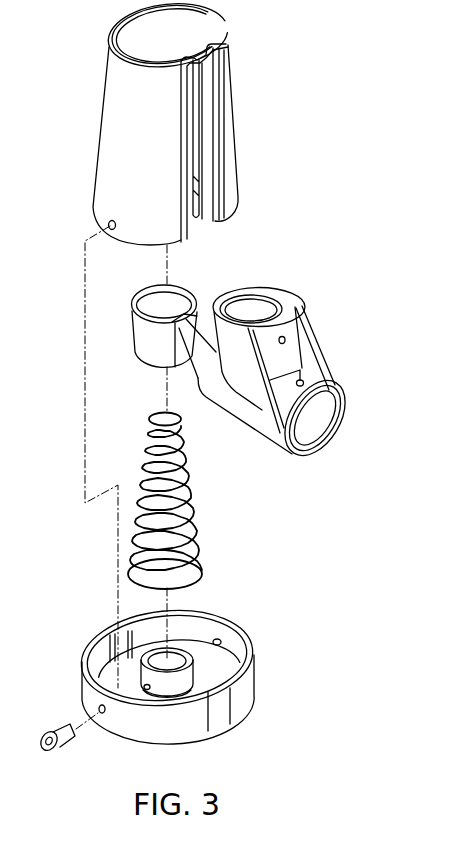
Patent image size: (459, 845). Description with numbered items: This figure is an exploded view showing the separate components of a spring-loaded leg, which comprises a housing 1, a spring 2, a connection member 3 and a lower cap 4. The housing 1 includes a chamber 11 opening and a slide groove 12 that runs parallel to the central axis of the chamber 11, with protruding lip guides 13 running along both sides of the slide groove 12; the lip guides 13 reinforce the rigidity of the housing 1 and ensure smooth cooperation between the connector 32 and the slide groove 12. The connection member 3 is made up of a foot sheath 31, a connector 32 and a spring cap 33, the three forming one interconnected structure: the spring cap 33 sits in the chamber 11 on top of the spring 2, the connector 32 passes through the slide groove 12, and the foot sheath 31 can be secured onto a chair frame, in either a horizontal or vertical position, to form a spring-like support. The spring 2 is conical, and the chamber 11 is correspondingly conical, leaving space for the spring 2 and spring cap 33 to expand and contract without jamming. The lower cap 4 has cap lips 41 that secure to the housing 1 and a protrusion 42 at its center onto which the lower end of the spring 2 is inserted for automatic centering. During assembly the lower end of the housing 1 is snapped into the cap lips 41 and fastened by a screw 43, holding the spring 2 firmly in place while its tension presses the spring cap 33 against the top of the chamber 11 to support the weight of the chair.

The housing 1 is at (100, 112).
The chamber 11 is at (202, 216).
The slide groove 12 is at (208, 156).
The lip guides 13 is at (192, 105).
The spring 2 is at (199, 528).
The connection member 3 is at (252, 363).
The foot sheath 31 is at (260, 310).
The connector 32 is at (190, 365).
The spring cap 33 is at (153, 338).
The lower cap 4 is at (137, 666).
The cap lips 41 is at (85, 645).
The protrusion 42 is at (148, 654).
The screw 43 is at (53, 725).